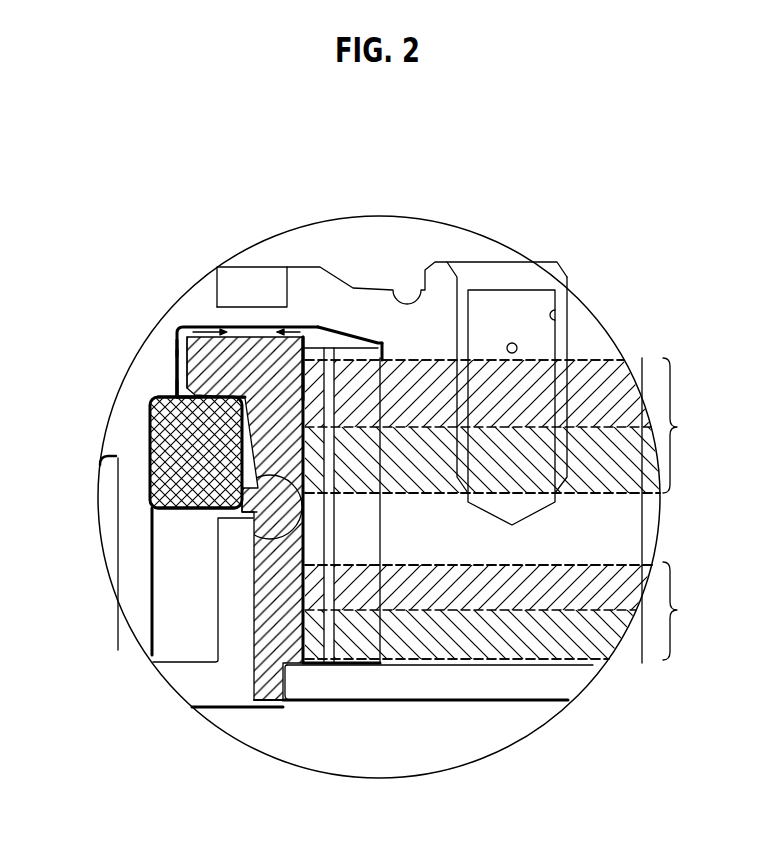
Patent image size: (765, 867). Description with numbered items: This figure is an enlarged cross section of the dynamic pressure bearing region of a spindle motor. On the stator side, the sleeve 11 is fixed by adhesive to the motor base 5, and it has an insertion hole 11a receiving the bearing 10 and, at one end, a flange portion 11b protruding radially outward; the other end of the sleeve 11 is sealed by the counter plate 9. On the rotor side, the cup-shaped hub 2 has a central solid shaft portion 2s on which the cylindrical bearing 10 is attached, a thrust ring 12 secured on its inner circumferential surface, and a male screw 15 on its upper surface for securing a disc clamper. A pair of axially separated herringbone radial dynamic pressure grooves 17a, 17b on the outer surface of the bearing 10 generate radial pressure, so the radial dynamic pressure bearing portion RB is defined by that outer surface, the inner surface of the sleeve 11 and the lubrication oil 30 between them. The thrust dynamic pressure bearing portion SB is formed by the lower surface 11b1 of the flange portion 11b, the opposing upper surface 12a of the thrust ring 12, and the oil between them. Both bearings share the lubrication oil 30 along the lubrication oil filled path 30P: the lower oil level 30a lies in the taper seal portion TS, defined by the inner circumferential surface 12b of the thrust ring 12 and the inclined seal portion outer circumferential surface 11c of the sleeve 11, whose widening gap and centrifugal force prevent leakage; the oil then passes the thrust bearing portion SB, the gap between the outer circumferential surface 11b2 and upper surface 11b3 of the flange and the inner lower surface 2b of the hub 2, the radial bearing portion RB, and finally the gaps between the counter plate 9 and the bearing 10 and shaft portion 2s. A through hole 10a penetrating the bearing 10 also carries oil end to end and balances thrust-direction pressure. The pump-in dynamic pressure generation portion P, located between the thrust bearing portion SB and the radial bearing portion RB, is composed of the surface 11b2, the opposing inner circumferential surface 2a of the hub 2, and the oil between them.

The hub 2 is at (597, 332).
The inner circumferential surface of the hub 2a is at (195, 323).
The inner lower surface of the hub 2b is at (328, 344).
The shaft portion 2s is at (630, 527).
The motor base 5 is at (218, 700).
The counter plate 9 is at (532, 688).
The bearing 10 is at (365, 550).
The through hole 10a is at (336, 548).
The sleeve 11 is at (312, 344).
The insertion hole 11a is at (307, 390).
The flange portion 11b is at (208, 343).
The lower surface of the flange portion 11b1 is at (180, 363).
The outer circumferential surface of the flange portion 11b2 is at (180, 378).
The upper surface of the flange portion 11b3 is at (305, 372).
The seal portion outer circumferential surface 11c is at (250, 521).
The thrust ring 12 is at (157, 477).
The upper surface of the thrust ring 12a is at (157, 433).
The inner circumferential surface of the thrust ring 12b is at (153, 509).
The male screw 15 is at (555, 315).
The radial dynamic pressure groove 17a is at (512, 425).
The radial dynamic pressure groove 17b is at (512, 611).
The lubrication oil 30 is at (290, 372).
The lubrication oil filled path 30P is at (356, 341).
The lower oil level 30a is at (280, 470).
The pump-in dynamic pressure generation portion P is at (171, 348).
The thrust dynamic pressure bearing portion SB is at (171, 386).
The taper seal portion TS is at (247, 513).
The radial dynamic pressure bearing portion RB is at (291, 619).